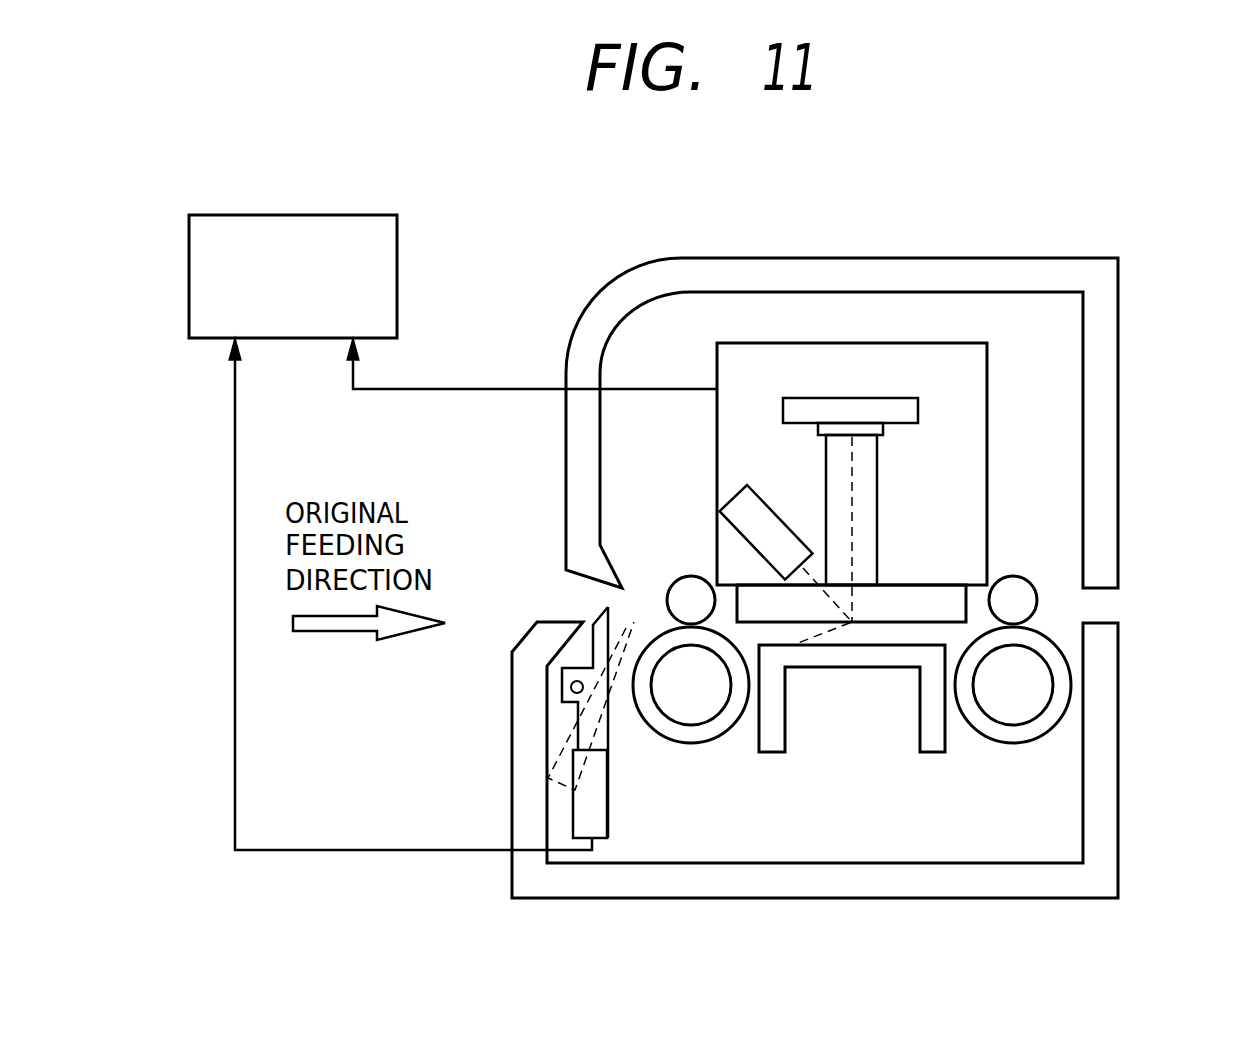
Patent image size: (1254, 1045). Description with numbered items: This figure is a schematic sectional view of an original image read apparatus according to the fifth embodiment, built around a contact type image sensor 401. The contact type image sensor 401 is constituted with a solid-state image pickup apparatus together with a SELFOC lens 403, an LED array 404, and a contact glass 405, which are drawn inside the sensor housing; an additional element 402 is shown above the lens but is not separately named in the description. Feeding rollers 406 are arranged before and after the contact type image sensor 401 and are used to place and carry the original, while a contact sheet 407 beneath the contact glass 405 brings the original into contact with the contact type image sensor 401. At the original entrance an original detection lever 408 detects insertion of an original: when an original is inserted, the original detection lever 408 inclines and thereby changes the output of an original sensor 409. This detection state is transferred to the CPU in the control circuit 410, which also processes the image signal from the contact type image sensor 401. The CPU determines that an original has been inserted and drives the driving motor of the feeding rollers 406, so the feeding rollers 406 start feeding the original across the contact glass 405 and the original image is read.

The contact type image sensor 401 is at (987, 371).
The light source 402 is at (918, 410).
The SELFOC lens 403 is at (878, 468).
The LED array 404 is at (719, 513).
The contact glass 405 is at (923, 600).
The feeding rollers 406 is at (708, 742).
The contact sheet 407 is at (792, 645).
The original detection lever 408 is at (605, 614).
The original sensor 409 is at (573, 810).
The control circuit 410 is at (338, 213).